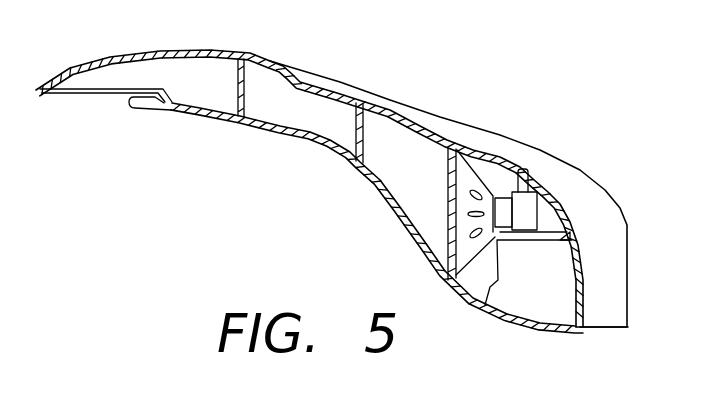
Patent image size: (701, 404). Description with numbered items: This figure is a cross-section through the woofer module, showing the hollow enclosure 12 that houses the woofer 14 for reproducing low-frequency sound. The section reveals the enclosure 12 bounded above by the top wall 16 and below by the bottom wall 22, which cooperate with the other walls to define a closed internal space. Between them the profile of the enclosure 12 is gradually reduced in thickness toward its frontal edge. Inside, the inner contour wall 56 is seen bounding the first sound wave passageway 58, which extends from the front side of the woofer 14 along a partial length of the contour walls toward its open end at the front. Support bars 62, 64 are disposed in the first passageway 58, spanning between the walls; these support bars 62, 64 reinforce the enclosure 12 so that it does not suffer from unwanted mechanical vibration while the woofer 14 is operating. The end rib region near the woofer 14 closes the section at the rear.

The enclosure 12 is at (462, 111).
The woofer 14 is at (495, 298).
The top wall 16 is at (333, 82).
The bottom wall 22 is at (558, 328).
The inner contour wall 56 is at (400, 172).
The first sound wave passageway 58 is at (293, 121).
The support bar 62 is at (356, 139).
The support bar 64 is at (229, 112).